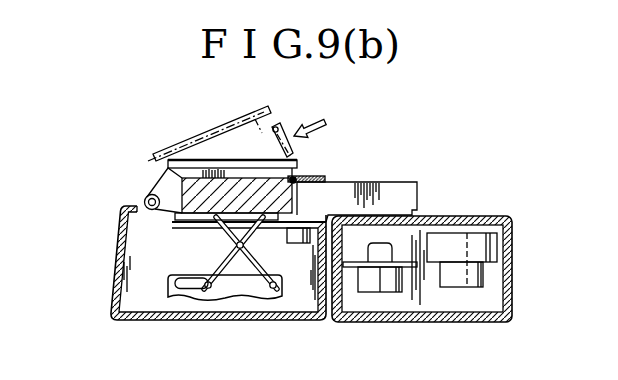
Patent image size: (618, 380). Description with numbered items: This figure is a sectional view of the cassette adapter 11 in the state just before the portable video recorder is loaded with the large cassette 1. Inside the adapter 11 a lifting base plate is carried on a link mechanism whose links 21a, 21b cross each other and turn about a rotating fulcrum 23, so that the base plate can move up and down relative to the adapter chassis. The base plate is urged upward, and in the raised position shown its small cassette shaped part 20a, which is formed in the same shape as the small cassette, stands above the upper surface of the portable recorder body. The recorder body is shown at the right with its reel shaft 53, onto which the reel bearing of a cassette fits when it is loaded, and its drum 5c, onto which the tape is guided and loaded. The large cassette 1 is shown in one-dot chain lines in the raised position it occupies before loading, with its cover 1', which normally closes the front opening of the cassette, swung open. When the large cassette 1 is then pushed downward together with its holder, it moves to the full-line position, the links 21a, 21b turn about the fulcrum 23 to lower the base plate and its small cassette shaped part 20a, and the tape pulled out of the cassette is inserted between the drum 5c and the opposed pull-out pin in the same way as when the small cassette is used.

The cassette adapter 11 is at (106, 228).
The large cassette 1 is at (237, 144).
The cover 1' is at (325, 158).
The small cassette shaped part 20a is at (385, 190).
The reel shaft 53 is at (393, 242).
The drum 5c is at (473, 240).
The rotating fulcrum 23 is at (236, 244).
The link 21a is at (262, 272).
The link 21b is at (229, 270).